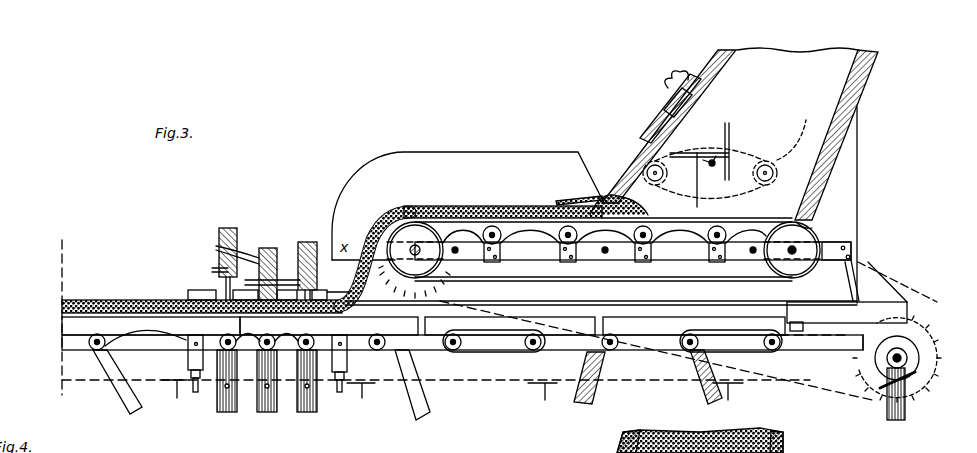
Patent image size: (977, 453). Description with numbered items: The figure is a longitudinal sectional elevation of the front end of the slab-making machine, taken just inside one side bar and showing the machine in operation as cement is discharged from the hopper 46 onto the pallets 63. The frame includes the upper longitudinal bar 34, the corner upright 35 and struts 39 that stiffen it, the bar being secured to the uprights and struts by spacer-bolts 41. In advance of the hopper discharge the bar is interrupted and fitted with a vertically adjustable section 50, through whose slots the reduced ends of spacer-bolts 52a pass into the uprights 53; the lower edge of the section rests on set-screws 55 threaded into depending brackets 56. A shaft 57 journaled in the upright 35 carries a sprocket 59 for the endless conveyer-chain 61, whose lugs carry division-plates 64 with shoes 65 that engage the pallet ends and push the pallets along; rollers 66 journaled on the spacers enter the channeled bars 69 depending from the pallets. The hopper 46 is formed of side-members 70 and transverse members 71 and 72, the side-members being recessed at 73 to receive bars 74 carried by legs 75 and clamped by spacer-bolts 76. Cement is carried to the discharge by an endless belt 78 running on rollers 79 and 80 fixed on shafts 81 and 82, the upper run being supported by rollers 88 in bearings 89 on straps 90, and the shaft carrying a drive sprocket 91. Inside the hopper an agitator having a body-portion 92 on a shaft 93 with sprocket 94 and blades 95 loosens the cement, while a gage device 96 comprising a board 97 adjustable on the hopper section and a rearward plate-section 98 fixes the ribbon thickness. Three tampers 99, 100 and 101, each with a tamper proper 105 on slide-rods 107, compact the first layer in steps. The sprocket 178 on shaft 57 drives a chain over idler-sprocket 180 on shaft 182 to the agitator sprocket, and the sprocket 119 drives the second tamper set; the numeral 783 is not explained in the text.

In FIG. 3, the longitudinally-extending bar 34 is at (903, 315).
In FIG. 3, the upright bar 35 is at (913, 394).
In FIG. 3, the struts 39 is at (118, 380).
In FIG. 3, the spacer-bolts 41 is at (97, 340).
In FIG. 3, the hopper 46 is at (599, 65).
In FIG. 3, the vertically adjustable section 50 is at (188, 292).
In FIG. 3, the spacer-bolts 52a is at (300, 338).
In FIG. 3, the uprights 53 is at (298, 390).
In FIG. 3, the set-screws 55 is at (197, 390).
In FIG. 3, the depending brackets 56 is at (188, 358).
In FIG. 3, the shaft 57 is at (895, 352).
In FIG. 3, the sprocket 59 is at (925, 340).
In FIG. 3, the endless conveyer-chain 61 is at (62, 378).
In FIG. 3, the pallets 63 is at (62, 306).
In FIG. 3, the division-plates 64 is at (546, 400).
In FIG. 3, the shoes 65 is at (530, 385).
In FIG. 3, the rollers 66 is at (110, 342).
In FIG. 3, the bars 69 is at (62, 325).
In FIG. 3, the side-members 70 is at (548, 152).
In FIG. 3, the transversely-disposed member 71 is at (870, 88).
In FIG. 4, the transversely-disposed member 71 is at (795, 446).
In FIG. 3, the hopper section 72 is at (714, 58).
In FIG. 4, the hopper section 72 is at (622, 438).
In FIG. 3, the recesses 73 is at (850, 240).
In FIG. 3, the bars 74 is at (530, 282).
In FIG. 3, the legs 75 is at (352, 290).
In FIG. 3, the spacer-bolts 76 is at (459, 250).
In FIG. 3, the endless belt 78 is at (716, 196).
In FIG. 3, the roller 79 is at (418, 224).
In FIG. 3, the roller 80 is at (792, 232).
In FIG. 3, the shaft 81 is at (412, 246).
In FIG. 3, the shaft 82 is at (812, 228).
In FIG. 3, the rollers 88 is at (534, 280).
In FIG. 3, the bearings 89 is at (483, 234).
In FIG. 3, the straps 90 is at (709, 252).
In FIG. 3, the sprocket 91 is at (450, 278).
In FIG. 3, the body-portion 92 is at (735, 165).
In FIG. 3, the shaft 93 is at (738, 147).
In FIG. 3, the sprocket 94 is at (745, 196).
In FIG. 3, the blades 95 is at (695, 152).
In FIG. 3, the gage device 96 is at (612, 176).
In FIG. 3, the board 97 is at (668, 106).
In FIG. 3, the plate-section 98 is at (588, 200).
In FIG. 3, the tamper 99 is at (307, 242).
In FIG. 3, the tamper 100 is at (268, 248).
In FIG. 3, the tamper 101 is at (230, 228).
In FIG. 3, the tamper proper 105 is at (222, 248).
In FIG. 3, the slide-rods 107 is at (242, 272).
In FIG. 3, the sprocket 119 is at (897, 277).
In FIG. 3, the sprocket 178 is at (934, 354).
In FIG. 3, the idler-sprocket 180 is at (660, 186).
In FIG. 3, the shaft 182 is at (648, 120).
In FIG. 3, the arc 783 is at (796, 135).